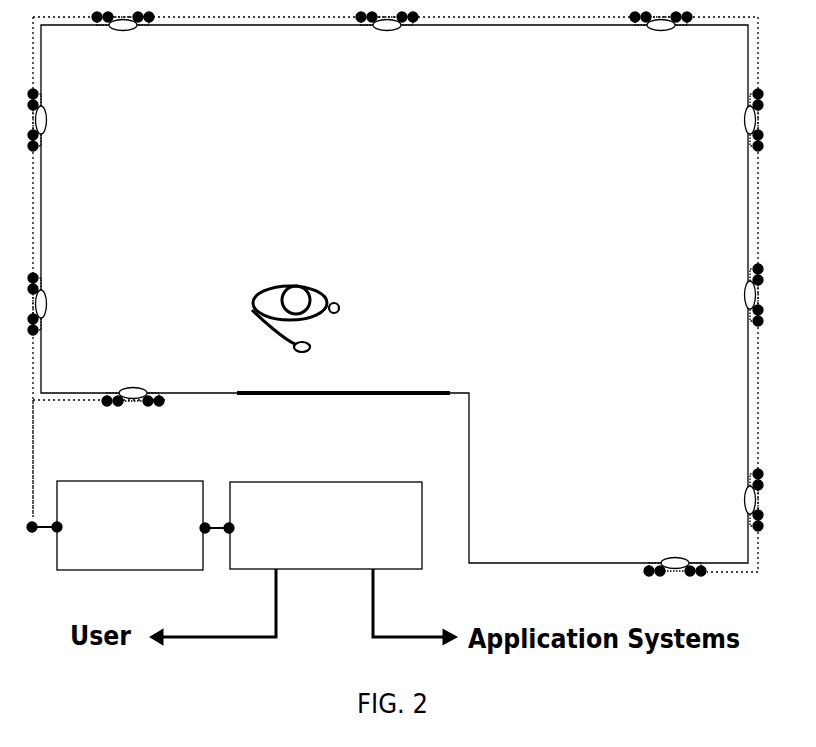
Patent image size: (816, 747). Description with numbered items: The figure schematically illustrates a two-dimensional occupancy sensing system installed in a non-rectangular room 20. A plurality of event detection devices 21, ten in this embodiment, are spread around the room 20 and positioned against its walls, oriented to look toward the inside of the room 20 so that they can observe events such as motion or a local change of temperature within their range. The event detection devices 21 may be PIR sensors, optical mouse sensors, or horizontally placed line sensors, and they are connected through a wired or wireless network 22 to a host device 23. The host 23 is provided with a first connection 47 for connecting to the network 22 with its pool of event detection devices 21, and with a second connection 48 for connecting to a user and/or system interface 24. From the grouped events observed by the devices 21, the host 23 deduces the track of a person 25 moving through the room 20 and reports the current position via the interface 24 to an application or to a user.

The room 20 is at (535, 277).
The event detection device 21 is at (738, 124).
The network 22 is at (33, 467).
The host device 23 is at (110, 497).
The user and/or system interface 24 is at (308, 495).
The person 25 is at (278, 275).
The first connection 47 is at (44, 536).
The second connection 48 is at (217, 540).